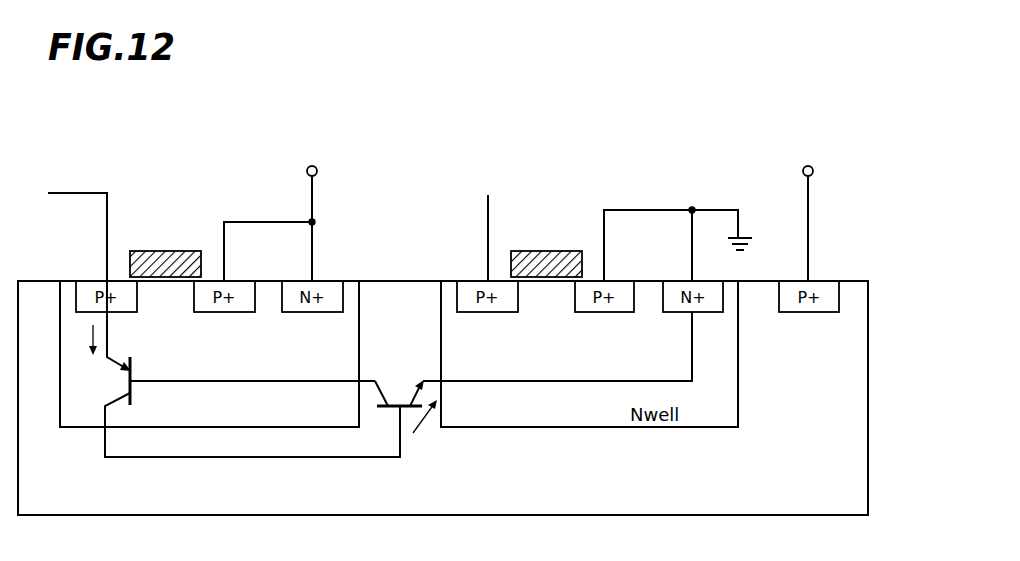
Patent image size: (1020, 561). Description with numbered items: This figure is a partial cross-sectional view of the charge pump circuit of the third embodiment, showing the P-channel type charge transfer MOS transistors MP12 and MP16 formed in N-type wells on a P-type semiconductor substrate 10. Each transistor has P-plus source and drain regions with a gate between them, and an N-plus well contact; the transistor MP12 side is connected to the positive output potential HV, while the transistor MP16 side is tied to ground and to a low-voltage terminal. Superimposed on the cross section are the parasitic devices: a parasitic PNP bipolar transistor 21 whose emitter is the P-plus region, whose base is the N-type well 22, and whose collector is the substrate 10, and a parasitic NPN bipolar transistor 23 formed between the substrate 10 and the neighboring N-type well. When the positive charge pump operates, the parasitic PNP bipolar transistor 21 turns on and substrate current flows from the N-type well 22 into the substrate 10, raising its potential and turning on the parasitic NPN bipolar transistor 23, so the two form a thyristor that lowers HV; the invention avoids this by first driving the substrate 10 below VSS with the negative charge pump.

The P-type semiconductor substrate 10 is at (850, 484).
The parasitic PNP bipolar transistor 21 is at (143, 373).
The N-type well 22 is at (62, 410).
The parasitic NPN bipolar transistor 23 is at (410, 373).
The P-channel type charge transfer MOS transistor MP12 is at (177, 183).
The P-channel type charge transfer MOS transistor MP16 is at (558, 183).